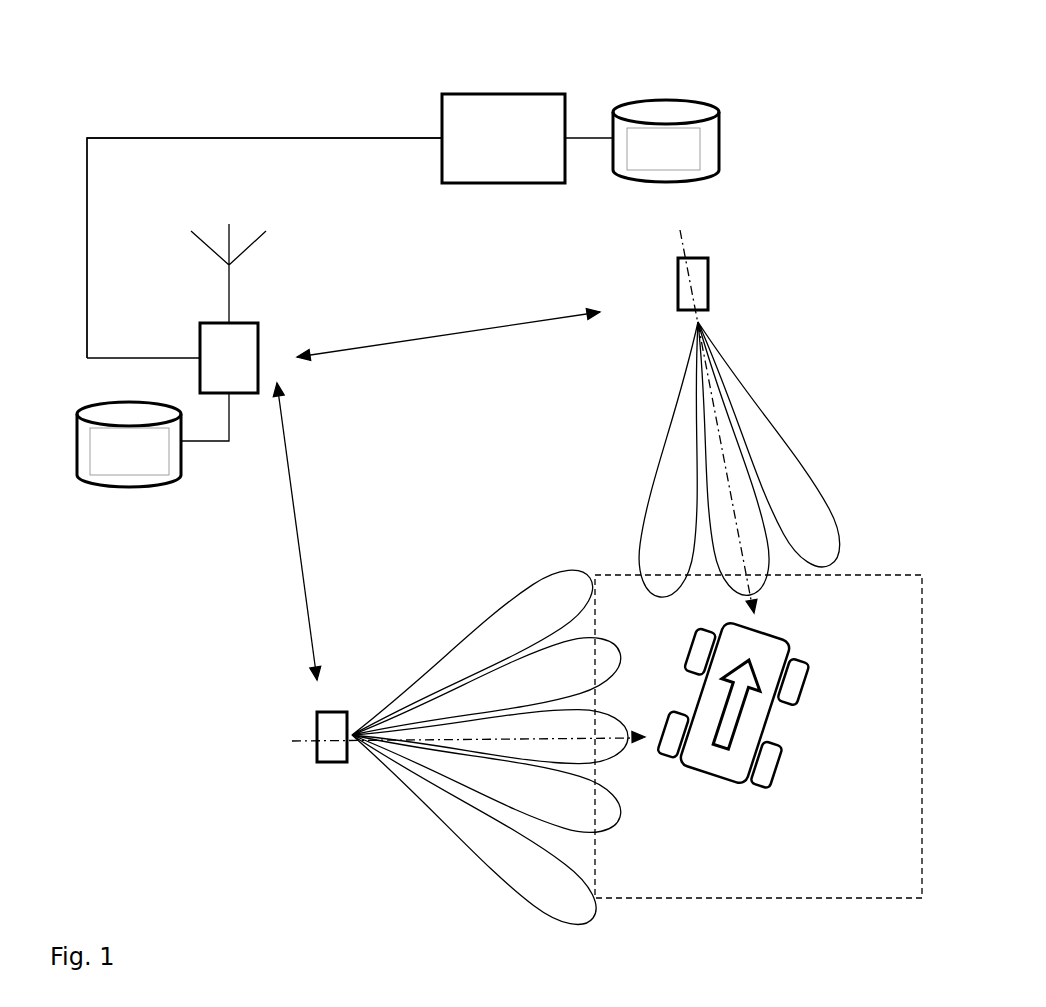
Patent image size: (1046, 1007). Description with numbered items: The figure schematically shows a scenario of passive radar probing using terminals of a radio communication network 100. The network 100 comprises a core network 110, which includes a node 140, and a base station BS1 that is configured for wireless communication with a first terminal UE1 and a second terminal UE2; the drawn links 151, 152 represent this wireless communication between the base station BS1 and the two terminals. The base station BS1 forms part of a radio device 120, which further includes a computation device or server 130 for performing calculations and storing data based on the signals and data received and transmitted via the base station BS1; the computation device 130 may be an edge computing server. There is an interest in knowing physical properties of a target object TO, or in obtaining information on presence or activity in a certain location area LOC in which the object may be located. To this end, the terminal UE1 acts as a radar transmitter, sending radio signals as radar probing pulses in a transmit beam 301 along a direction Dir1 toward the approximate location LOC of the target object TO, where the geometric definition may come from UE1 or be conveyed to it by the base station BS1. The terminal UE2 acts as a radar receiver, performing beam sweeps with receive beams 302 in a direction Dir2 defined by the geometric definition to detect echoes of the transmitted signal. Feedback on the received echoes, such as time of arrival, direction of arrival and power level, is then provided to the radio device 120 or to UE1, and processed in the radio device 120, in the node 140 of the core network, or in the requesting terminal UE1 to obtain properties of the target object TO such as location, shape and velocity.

The radio communication network 100 is at (210, 70).
The core network 110 is at (485, 152).
The radio device 120 is at (68, 350).
The computation device 130 is at (111, 467).
The node 140 is at (647, 163).
The communication link between BS1 and UE1 151 is at (306, 531).
The communication link between BS1 and UE2 152 is at (448, 329).
The transmit beam 301 is at (498, 610).
The receive beams 302 is at (786, 445).
The base station BS1 is at (190, 333).
The first terminal UE1 is at (333, 768).
The second terminal UE2 is at (676, 272).
The direction Dir1 is at (300, 733).
The direction Dir2 is at (683, 242).
The target object TO is at (737, 797).
The location area LOC is at (752, 893).